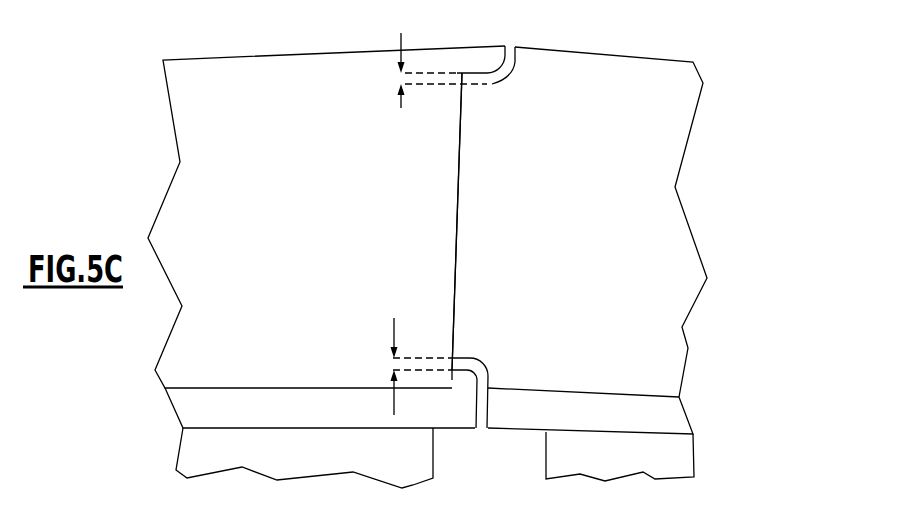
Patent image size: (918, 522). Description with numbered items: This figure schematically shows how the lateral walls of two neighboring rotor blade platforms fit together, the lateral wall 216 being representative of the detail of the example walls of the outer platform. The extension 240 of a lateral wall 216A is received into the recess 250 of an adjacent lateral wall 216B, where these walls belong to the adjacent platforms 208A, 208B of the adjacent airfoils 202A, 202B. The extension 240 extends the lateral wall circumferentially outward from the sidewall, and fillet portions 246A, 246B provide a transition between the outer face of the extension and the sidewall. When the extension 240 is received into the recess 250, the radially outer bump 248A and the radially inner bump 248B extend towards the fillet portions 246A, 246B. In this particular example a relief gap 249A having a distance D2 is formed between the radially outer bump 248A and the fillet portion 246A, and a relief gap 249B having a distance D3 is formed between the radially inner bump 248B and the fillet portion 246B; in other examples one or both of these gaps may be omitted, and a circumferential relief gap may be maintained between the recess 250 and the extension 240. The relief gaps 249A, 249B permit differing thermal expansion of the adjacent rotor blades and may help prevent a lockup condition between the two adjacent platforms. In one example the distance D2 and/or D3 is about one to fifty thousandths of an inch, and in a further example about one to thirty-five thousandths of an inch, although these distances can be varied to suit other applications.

The adjacent lateral wall 216B is at (305, 238).
The lateral wall 216A is at (625, 238).
The lateral wall 216 is at (478, 518).
The adjacent platform 208B is at (195, 410).
The platform 208A is at (673, 410).
The adjacent airfoil 202B is at (195, 458).
The airfoil 202A is at (683, 458).
The extension 240 is at (480, 178).
The recess 250 is at (446, 198).
The radially outer bump 248A is at (483, 60).
The radially inner bump 248B is at (474, 378).
The fillet portion 246A is at (516, 83).
The fillet portion 246B is at (502, 365).
The relief gap 249A is at (487, 88).
The relief gap 249B is at (473, 354).
The distance D2 is at (397, 53).
The distance D3 is at (394, 333).